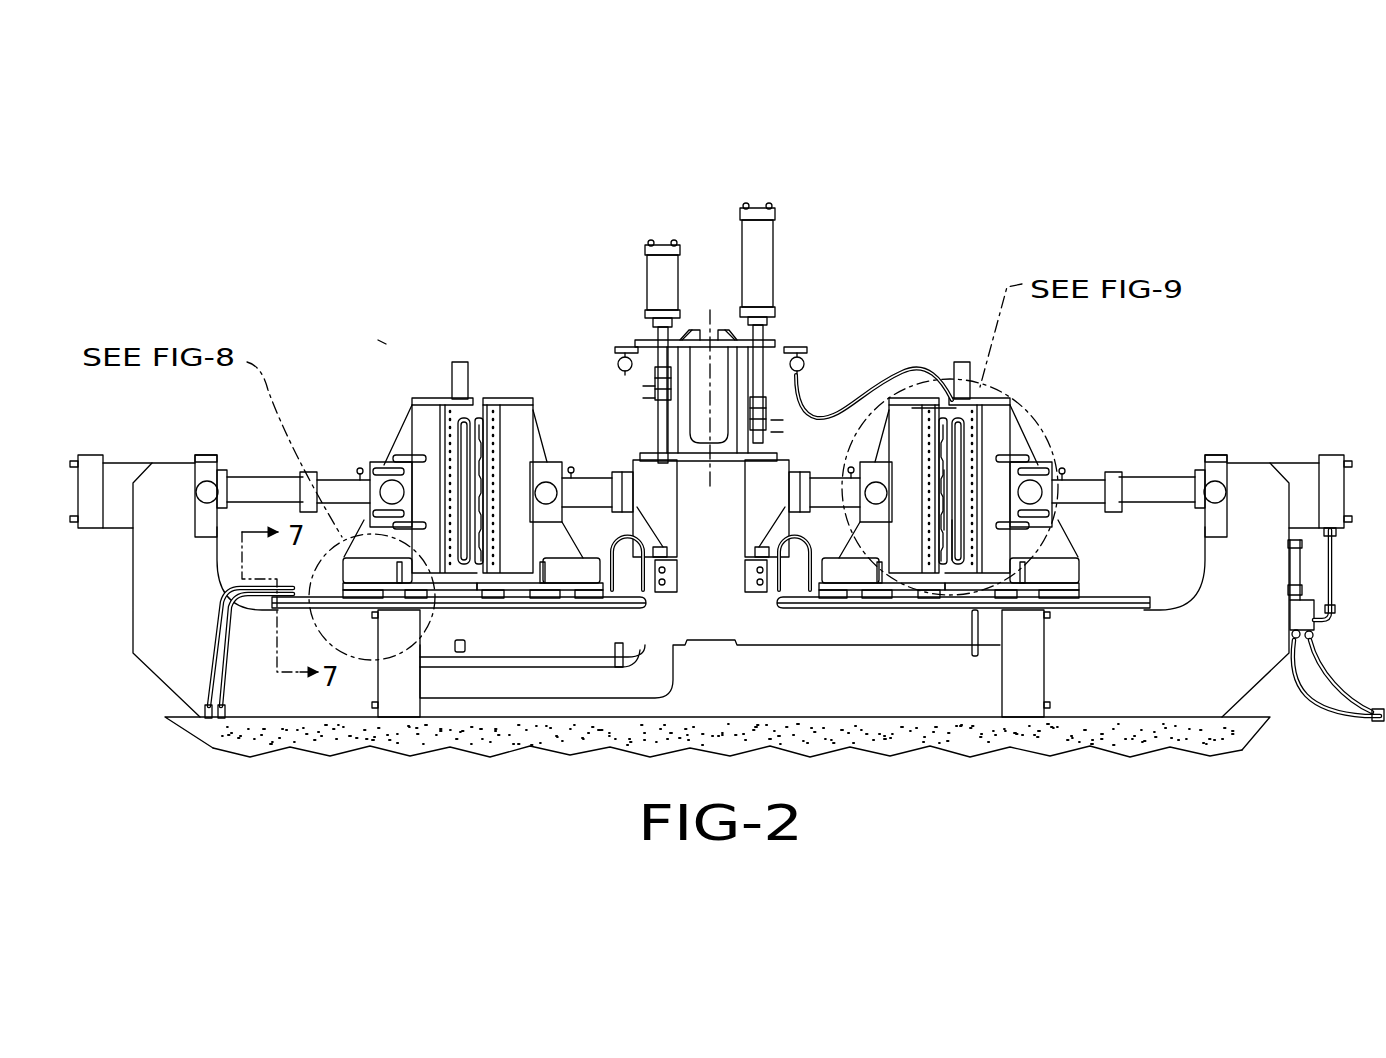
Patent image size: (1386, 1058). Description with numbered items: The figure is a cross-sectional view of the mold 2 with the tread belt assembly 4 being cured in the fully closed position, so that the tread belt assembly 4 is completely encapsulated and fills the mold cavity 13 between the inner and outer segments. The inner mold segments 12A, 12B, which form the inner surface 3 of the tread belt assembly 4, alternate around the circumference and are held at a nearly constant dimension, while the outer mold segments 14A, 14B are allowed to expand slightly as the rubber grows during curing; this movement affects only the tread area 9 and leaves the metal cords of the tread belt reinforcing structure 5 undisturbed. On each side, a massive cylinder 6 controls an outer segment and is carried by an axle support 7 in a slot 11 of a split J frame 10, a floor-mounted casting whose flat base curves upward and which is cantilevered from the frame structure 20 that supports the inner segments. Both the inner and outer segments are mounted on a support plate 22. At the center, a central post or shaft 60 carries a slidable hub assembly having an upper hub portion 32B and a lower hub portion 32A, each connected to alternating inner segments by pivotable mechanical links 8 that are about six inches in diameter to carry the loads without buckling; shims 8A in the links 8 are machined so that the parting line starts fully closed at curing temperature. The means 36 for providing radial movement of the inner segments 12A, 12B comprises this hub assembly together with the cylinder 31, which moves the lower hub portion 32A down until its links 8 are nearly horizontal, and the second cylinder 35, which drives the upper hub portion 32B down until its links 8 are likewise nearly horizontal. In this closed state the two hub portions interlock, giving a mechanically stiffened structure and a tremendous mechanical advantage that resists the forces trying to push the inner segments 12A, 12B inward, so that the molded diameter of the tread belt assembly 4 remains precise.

The mold 2 is at (378, 336).
The inner surface 3 is at (922, 420).
The tread belt assembly 4 is at (462, 443).
The tread belt reinforcing structure 5 is at (937, 517).
The cylinder 6 is at (112, 480).
The axle support 7 is at (206, 488).
The mechanical link 8 is at (588, 490).
The shim 8A is at (614, 477).
The tread area 9 is at (953, 550).
The split J frame 10 is at (177, 610).
The slot 11 is at (195, 491).
The inner mold segment 12A is at (517, 437).
The inner mold segment 12B is at (900, 442).
The mold cavity 13 is at (960, 420).
The outer mold segment 14A is at (423, 443).
The outer mold segment 14B is at (997, 443).
The frame structure 20 is at (483, 623).
The support plate 22 is at (547, 608).
The cylinder 31 is at (660, 292).
The lower hub portion 32A is at (660, 513).
The upper hub portion 32B is at (763, 462).
The cylinder 35 is at (760, 254).
The means for providing radial movement 36 is at (796, 197).
The central post or shaft 60 is at (681, 350).